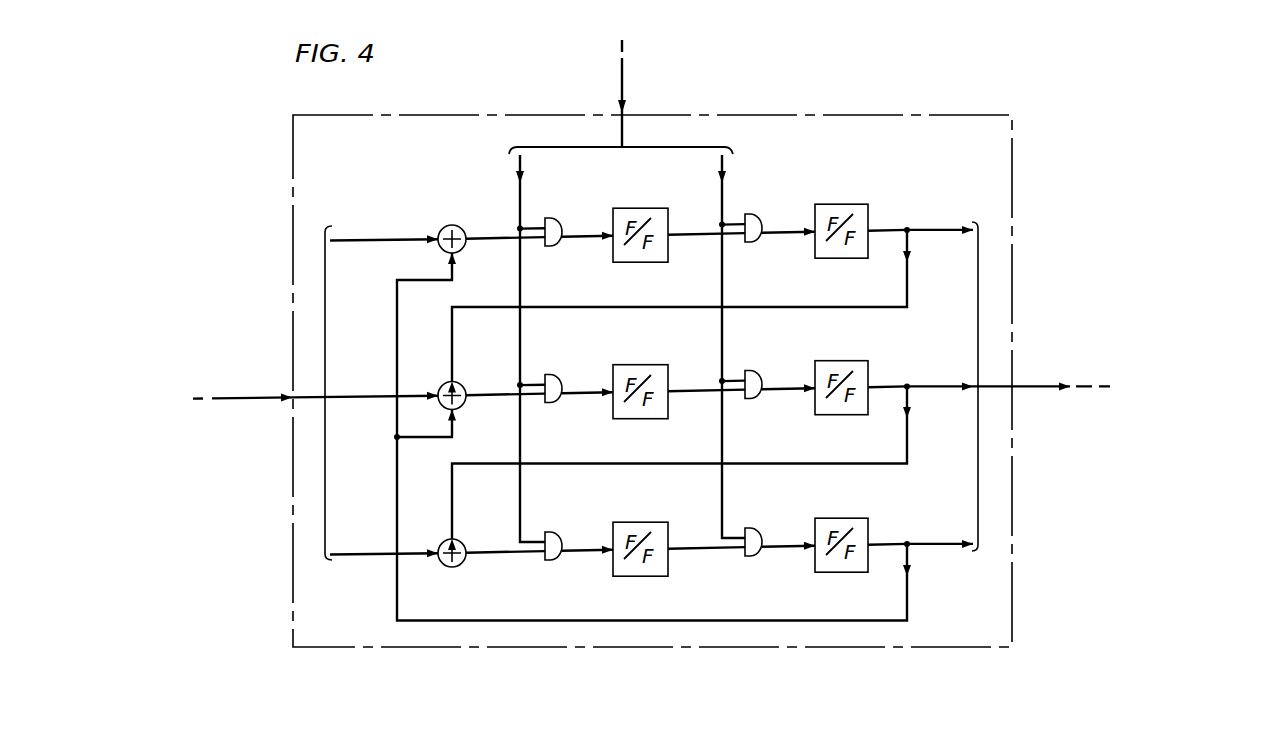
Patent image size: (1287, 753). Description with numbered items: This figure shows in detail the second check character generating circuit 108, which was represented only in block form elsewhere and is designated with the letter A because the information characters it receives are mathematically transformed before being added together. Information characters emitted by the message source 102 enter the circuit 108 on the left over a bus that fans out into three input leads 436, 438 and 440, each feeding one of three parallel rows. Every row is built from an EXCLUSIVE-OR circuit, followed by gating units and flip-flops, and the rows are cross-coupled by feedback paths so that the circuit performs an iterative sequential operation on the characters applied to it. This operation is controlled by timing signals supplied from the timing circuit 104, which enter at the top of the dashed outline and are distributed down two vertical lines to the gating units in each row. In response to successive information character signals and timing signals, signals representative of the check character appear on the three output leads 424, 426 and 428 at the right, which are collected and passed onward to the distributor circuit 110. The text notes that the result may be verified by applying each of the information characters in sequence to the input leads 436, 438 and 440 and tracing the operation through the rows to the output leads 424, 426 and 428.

The second check character generating circuit 108 is at (391, 115).
The timing circuit 104 is at (624, 92).
The message source 102 is at (276, 392).
The distributor circuit 110 is at (1019, 389).
The input lead 436 is at (382, 238).
The input lead 438 is at (382, 395).
The input lead 440 is at (382, 551).
The output lead 424 is at (952, 229).
The output lead 426 is at (951, 384).
The output lead 428 is at (952, 541).